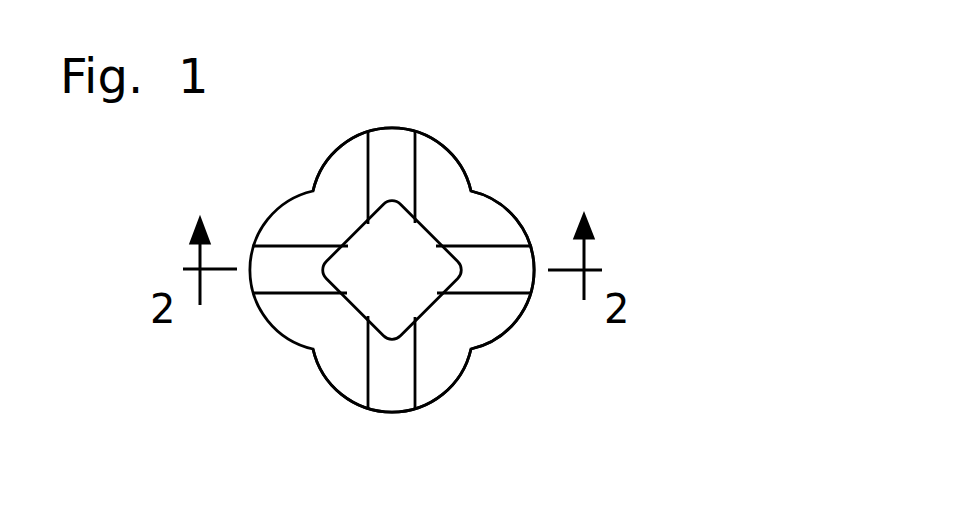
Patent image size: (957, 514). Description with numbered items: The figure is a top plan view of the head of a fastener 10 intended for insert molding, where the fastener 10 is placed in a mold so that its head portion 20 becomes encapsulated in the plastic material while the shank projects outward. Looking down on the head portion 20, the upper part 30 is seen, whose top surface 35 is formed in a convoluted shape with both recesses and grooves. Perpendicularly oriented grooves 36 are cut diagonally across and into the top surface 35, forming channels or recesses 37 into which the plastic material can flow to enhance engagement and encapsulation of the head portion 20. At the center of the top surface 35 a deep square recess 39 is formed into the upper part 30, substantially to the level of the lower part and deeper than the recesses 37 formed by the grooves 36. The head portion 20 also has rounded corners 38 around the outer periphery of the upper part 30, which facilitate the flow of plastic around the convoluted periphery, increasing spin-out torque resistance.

The fastener 10 is at (524, 110).
The head portion 20 is at (306, 183).
The upper part 30 is at (463, 370).
The top surface 35 is at (468, 207).
The grooves 36 is at (410, 150).
The channels or recesses 37 is at (385, 130).
The rounded corners 38 is at (376, 128).
The square recess 39 is at (353, 308).